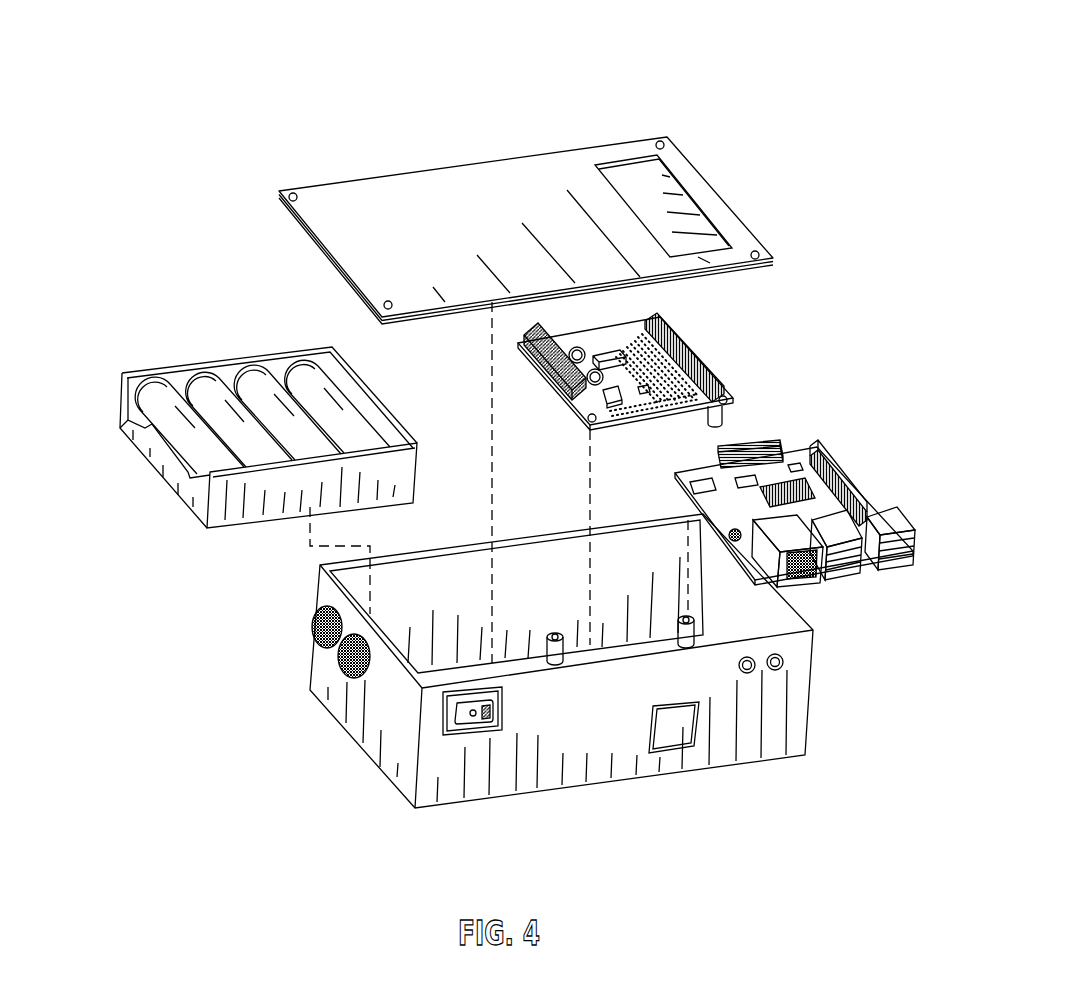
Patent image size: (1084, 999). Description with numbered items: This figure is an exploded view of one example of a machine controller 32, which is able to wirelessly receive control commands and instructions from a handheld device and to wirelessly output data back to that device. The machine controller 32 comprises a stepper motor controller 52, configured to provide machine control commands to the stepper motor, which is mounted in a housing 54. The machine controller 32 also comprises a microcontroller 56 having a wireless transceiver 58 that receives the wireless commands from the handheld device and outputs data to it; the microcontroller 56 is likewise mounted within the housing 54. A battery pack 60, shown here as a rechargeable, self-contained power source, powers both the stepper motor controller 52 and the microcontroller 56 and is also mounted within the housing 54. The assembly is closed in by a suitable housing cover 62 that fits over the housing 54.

The machine controller 32 is at (783, 43).
The stepper motor controller 52 is at (716, 347).
The housing 54 is at (393, 777).
The microcontroller 56 is at (842, 452).
The wireless transceiver 58 is at (880, 493).
The battery pack 60 is at (128, 445).
The housing cover 62 is at (318, 188).